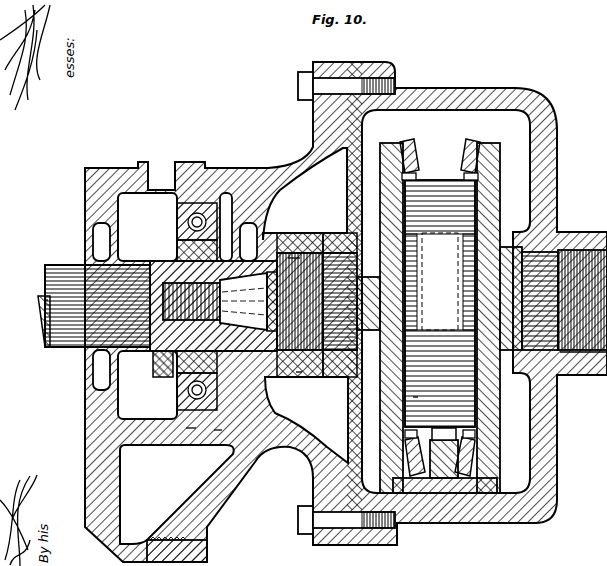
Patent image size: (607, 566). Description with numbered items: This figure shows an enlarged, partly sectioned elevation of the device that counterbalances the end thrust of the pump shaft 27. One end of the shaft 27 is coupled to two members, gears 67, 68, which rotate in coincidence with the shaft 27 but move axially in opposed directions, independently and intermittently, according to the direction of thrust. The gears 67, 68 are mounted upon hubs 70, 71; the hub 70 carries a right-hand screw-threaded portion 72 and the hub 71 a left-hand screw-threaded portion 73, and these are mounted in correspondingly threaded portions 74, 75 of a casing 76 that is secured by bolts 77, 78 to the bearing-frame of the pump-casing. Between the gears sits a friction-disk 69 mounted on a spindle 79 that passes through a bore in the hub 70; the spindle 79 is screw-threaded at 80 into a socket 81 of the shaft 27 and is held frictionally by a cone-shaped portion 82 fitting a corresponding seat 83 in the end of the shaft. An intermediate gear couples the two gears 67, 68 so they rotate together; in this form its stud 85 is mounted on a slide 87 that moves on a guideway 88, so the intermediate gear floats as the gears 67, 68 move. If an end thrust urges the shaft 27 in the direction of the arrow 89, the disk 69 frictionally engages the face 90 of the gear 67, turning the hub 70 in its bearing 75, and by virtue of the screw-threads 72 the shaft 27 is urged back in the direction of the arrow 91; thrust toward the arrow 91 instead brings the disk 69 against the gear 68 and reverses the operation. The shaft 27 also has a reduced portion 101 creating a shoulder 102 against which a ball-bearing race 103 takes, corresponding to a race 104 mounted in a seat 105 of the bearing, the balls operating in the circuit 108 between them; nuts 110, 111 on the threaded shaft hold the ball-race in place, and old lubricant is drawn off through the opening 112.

The shaft 27 is at (75, 345).
The gear 67 is at (410, 150).
The gear 68 is at (478, 150).
The friction-disk 69 is at (437, 190).
The hub 70 is at (335, 262).
The hub 71 is at (535, 258).
The right-hand screw-threaded portion 72 is at (305, 262).
The left-hand screw-threaded portion 73 is at (580, 248).
The threaded portion of casing 74 is at (575, 365).
The threaded portion of casing 75 is at (298, 377).
The casing 76 is at (545, 112).
The bolt 77 is at (330, 82).
The bolt 78 is at (325, 525).
The spindle 79 is at (380, 327).
The screw-threaded portion of spindle 80 is at (150, 354).
The socket 81 is at (160, 275).
The cone-shaped portion 82 is at (288, 258).
The seat 83 is at (262, 280).
The stud 85 is at (408, 470).
The slide 87 is at (487, 470).
The guideway 88 is at (480, 492).
The arrow 89 is at (42, 300).
The face of gear 90 is at (413, 397).
The arrow 91 is at (32, 258).
The reduced portion 101 is at (228, 200).
The shoulder 102 is at (247, 235).
The ball-bearing race 103 is at (188, 232).
The race 104 is at (190, 428).
The seat 105 is at (218, 432).
The circuit 108 is at (195, 378).
The nut 110 is at (158, 368).
The nut 111 is at (185, 388).
The opening 112 is at (208, 540).